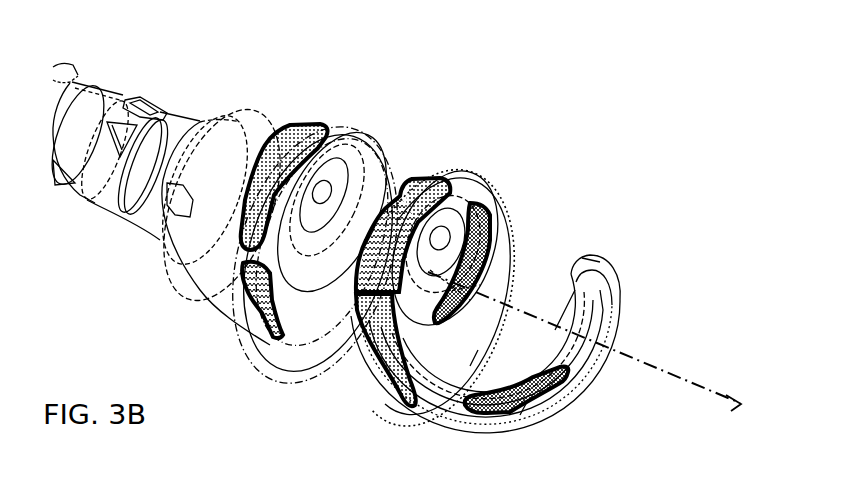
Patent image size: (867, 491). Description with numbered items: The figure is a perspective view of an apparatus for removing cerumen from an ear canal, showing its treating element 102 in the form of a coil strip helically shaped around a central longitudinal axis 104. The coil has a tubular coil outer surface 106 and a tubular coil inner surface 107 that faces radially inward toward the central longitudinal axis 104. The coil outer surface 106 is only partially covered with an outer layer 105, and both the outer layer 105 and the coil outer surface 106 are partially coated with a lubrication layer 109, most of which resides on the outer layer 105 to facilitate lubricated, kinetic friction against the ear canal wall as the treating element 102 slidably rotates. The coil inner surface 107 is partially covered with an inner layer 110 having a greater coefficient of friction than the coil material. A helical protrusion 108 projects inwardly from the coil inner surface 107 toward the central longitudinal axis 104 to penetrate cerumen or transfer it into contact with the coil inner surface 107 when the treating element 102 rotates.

The treating element 102 is at (535, 83).
The central longitudinal axis 104 is at (637, 358).
The outer layer 105 is at (298, 142).
The coil outer surface 106 is at (335, 130).
The coil inner surface 107 is at (323, 263).
The helical protrusion 108 is at (522, 360).
The lubrication layer 109 is at (392, 230).
The inner layer 110 is at (557, 393).